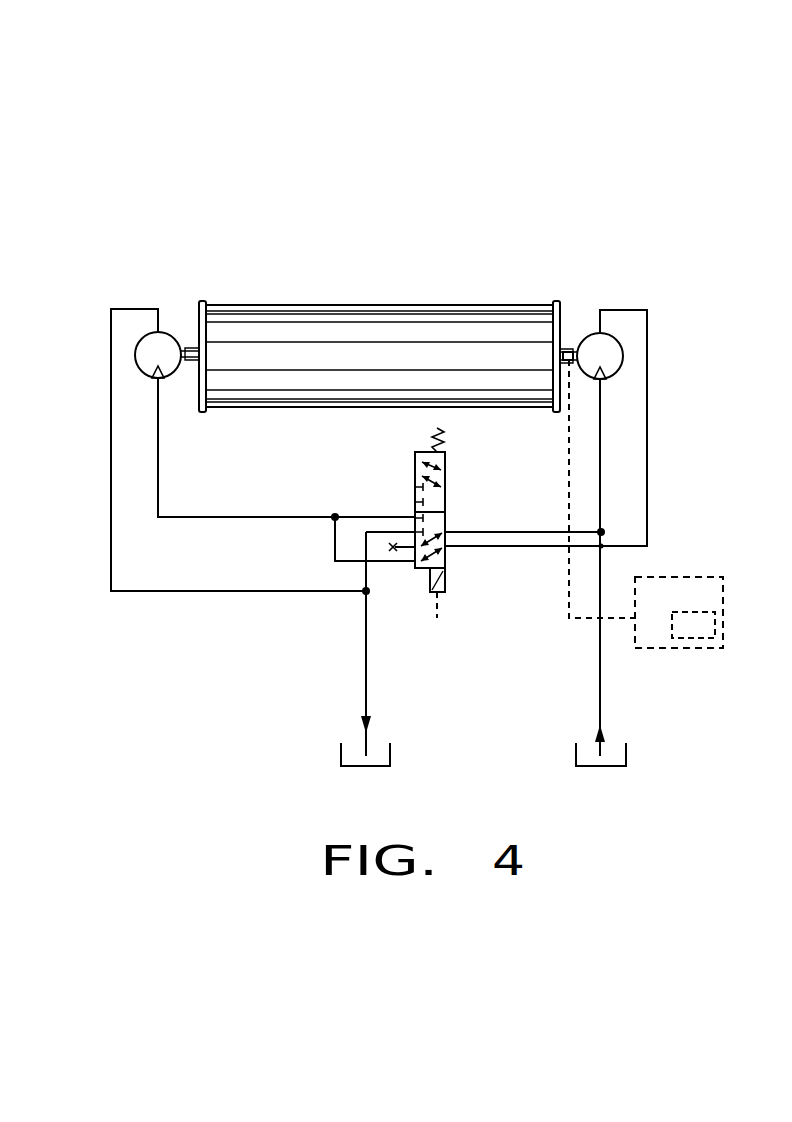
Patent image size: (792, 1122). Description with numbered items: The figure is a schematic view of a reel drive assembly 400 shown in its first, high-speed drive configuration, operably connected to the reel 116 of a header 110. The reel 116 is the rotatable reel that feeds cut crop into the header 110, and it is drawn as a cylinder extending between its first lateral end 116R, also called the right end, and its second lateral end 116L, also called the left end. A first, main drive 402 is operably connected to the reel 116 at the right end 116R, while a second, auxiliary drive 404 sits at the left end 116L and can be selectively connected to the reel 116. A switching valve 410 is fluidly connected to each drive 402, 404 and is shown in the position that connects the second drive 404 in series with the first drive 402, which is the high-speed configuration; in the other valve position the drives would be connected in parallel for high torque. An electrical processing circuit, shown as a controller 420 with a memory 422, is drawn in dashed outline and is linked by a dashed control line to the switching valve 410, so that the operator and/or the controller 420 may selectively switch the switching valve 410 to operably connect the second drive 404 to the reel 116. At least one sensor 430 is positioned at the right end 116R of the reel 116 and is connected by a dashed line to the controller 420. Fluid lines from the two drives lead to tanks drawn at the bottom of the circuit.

The header 110 is at (447, 196).
The reel drive assembly 400 is at (492, 267).
The reel 116 is at (325, 305).
The second lateral end 116L is at (182, 320).
The first lateral end 116R is at (568, 323).
The sensor 430 is at (575, 350).
The second, auxiliary drive 404 is at (162, 377).
The first, main drive 402 is at (613, 375).
The switching valve 410 is at (446, 515).
The controller 420 is at (670, 577).
The memory 422 is at (693, 640).